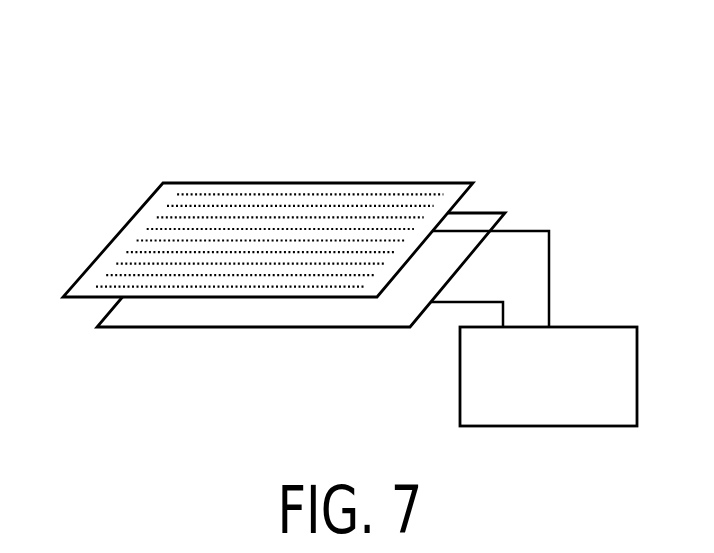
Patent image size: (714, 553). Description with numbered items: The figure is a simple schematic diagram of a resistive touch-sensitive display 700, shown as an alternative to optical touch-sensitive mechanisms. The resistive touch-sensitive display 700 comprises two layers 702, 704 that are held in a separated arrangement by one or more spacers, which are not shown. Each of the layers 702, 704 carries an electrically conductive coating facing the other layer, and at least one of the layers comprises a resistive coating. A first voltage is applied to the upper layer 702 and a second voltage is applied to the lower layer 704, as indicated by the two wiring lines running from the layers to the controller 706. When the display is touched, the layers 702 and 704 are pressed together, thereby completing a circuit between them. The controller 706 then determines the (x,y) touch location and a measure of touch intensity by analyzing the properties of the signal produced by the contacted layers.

The resistive touch-sensitive display 700 is at (322, 88).
The layer 702 is at (385, 182).
The layer 704 is at (368, 328).
The controller 706 is at (594, 326).